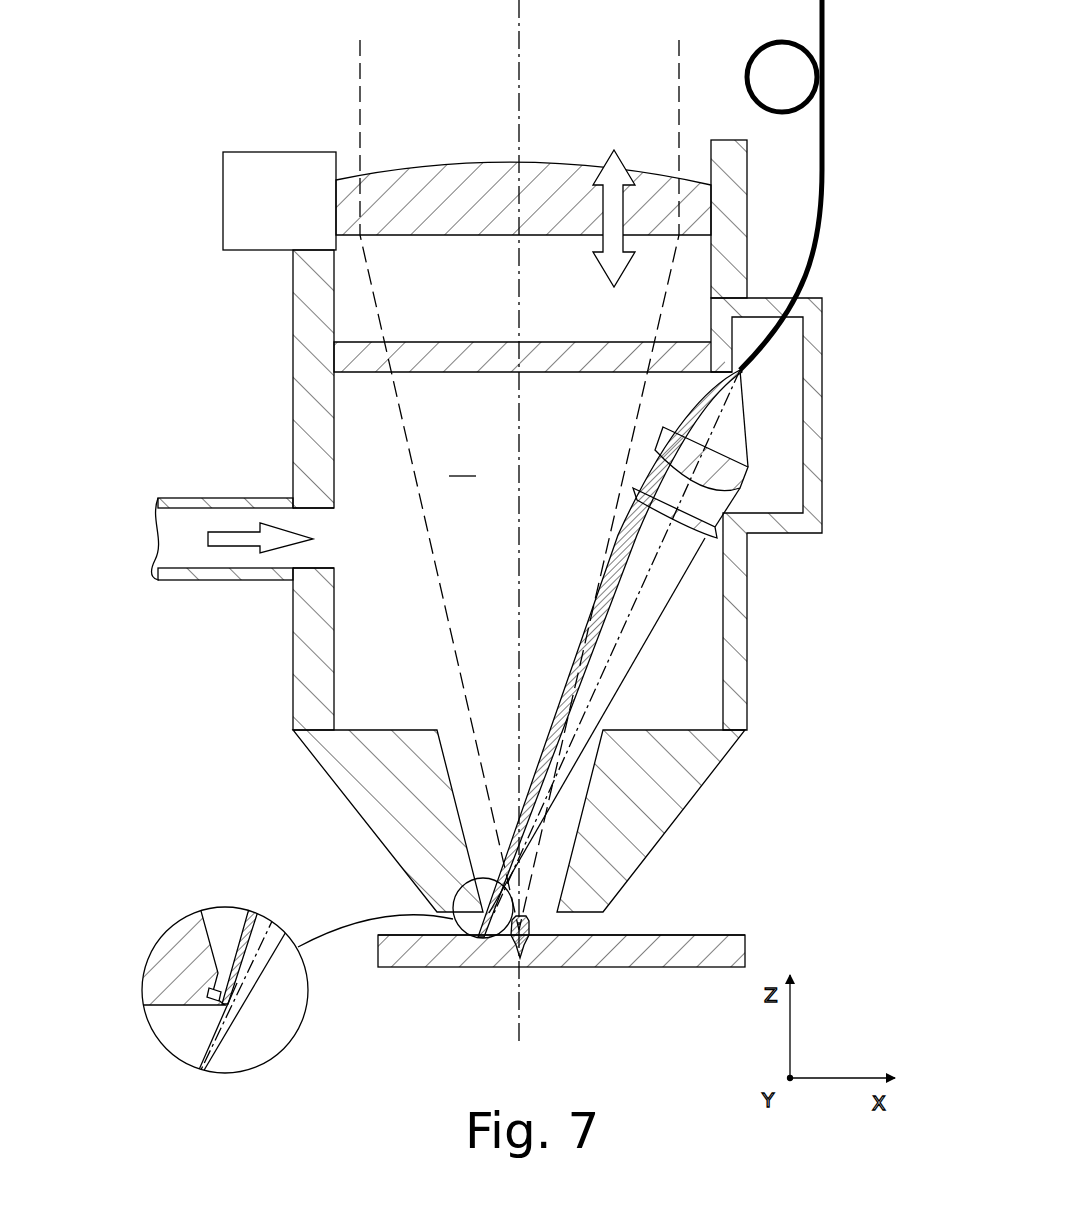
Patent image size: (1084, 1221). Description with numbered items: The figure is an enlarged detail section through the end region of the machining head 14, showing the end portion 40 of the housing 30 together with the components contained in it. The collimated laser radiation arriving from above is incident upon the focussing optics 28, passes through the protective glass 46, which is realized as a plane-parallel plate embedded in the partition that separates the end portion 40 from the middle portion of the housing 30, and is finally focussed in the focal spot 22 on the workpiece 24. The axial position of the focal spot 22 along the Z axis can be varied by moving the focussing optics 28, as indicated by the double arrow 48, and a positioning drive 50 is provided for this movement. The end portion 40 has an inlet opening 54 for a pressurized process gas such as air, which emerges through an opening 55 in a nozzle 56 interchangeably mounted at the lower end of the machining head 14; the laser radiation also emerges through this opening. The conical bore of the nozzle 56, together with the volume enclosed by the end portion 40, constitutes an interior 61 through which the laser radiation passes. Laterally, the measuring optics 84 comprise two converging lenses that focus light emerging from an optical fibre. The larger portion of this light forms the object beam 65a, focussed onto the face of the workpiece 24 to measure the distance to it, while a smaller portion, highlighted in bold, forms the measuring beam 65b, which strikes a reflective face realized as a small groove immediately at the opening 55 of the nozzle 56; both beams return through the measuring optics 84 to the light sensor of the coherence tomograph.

The machining head 14 is at (264, 731).
The focal spot 22 is at (516, 968).
The workpiece 24 is at (573, 965).
The focussing optics 28 is at (561, 172).
The housing 30 is at (748, 677).
The end portion 40 is at (792, 439).
The protective glass 46 is at (578, 360).
The double arrow 48 is at (585, 242).
The positioning drive 50 is at (302, 158).
The inlet opening 54 is at (320, 529).
The opening 55 is at (540, 918).
The nozzle 56 is at (663, 807).
The interior 61 is at (462, 464).
The object beam 65a is at (650, 617).
The measuring beam 65b is at (617, 563).
The measuring optics 84 is at (748, 498).